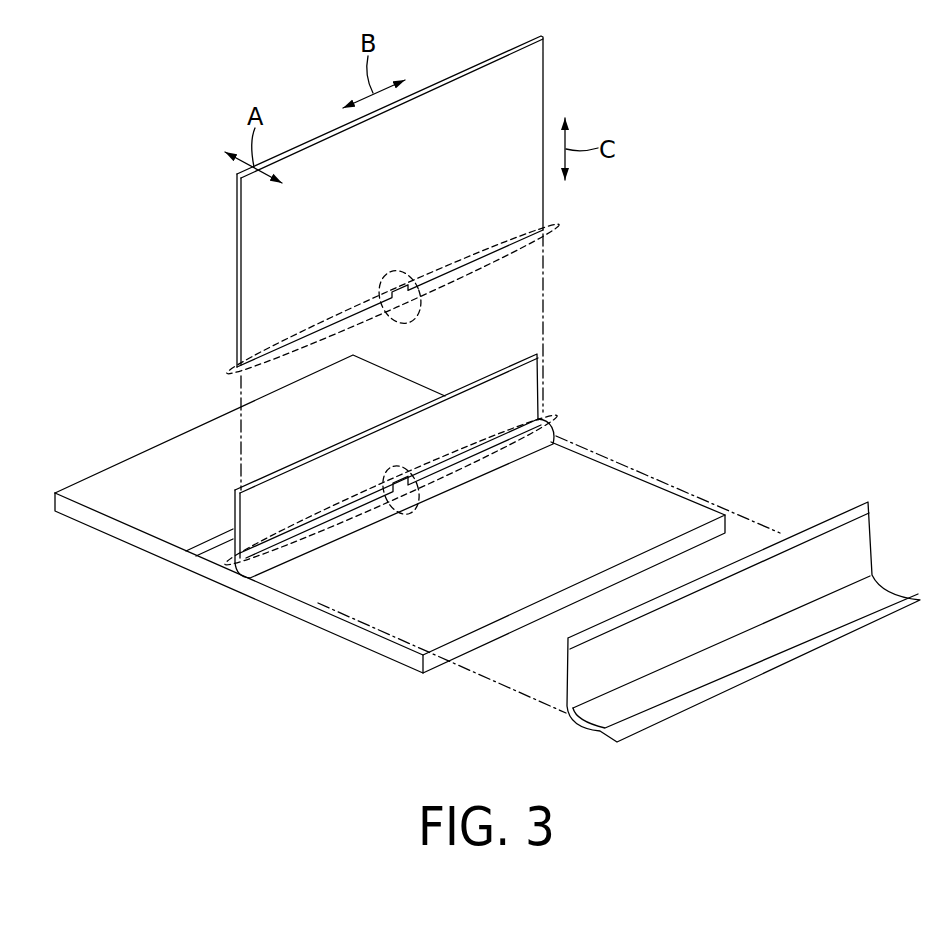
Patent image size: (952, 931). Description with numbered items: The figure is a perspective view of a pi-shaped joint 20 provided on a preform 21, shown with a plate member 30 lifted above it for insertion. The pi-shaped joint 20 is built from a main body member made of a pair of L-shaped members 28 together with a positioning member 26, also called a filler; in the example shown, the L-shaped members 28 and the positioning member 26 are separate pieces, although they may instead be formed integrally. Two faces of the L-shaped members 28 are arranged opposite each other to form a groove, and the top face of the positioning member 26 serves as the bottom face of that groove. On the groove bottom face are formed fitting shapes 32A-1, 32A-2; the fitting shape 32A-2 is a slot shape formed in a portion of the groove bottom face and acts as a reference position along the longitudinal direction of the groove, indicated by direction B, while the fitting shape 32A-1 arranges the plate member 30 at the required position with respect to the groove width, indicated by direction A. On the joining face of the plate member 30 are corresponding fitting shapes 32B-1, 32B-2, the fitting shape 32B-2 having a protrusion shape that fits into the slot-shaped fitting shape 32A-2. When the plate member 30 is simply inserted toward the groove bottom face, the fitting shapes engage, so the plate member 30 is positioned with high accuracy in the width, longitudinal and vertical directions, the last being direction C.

The pi-shaped joint 20 is at (572, 368).
The preform 21 is at (373, 650).
The positioning member 26 is at (268, 572).
The L-shaped member 28 is at (866, 546).
The plate member 30 is at (536, 66).
The fitting shape 32A-1 is at (556, 416).
The fitting shape 32A-2 is at (397, 468).
The fitting shape 32B-1 is at (560, 224).
The fitting shape 32B-2 is at (416, 311).